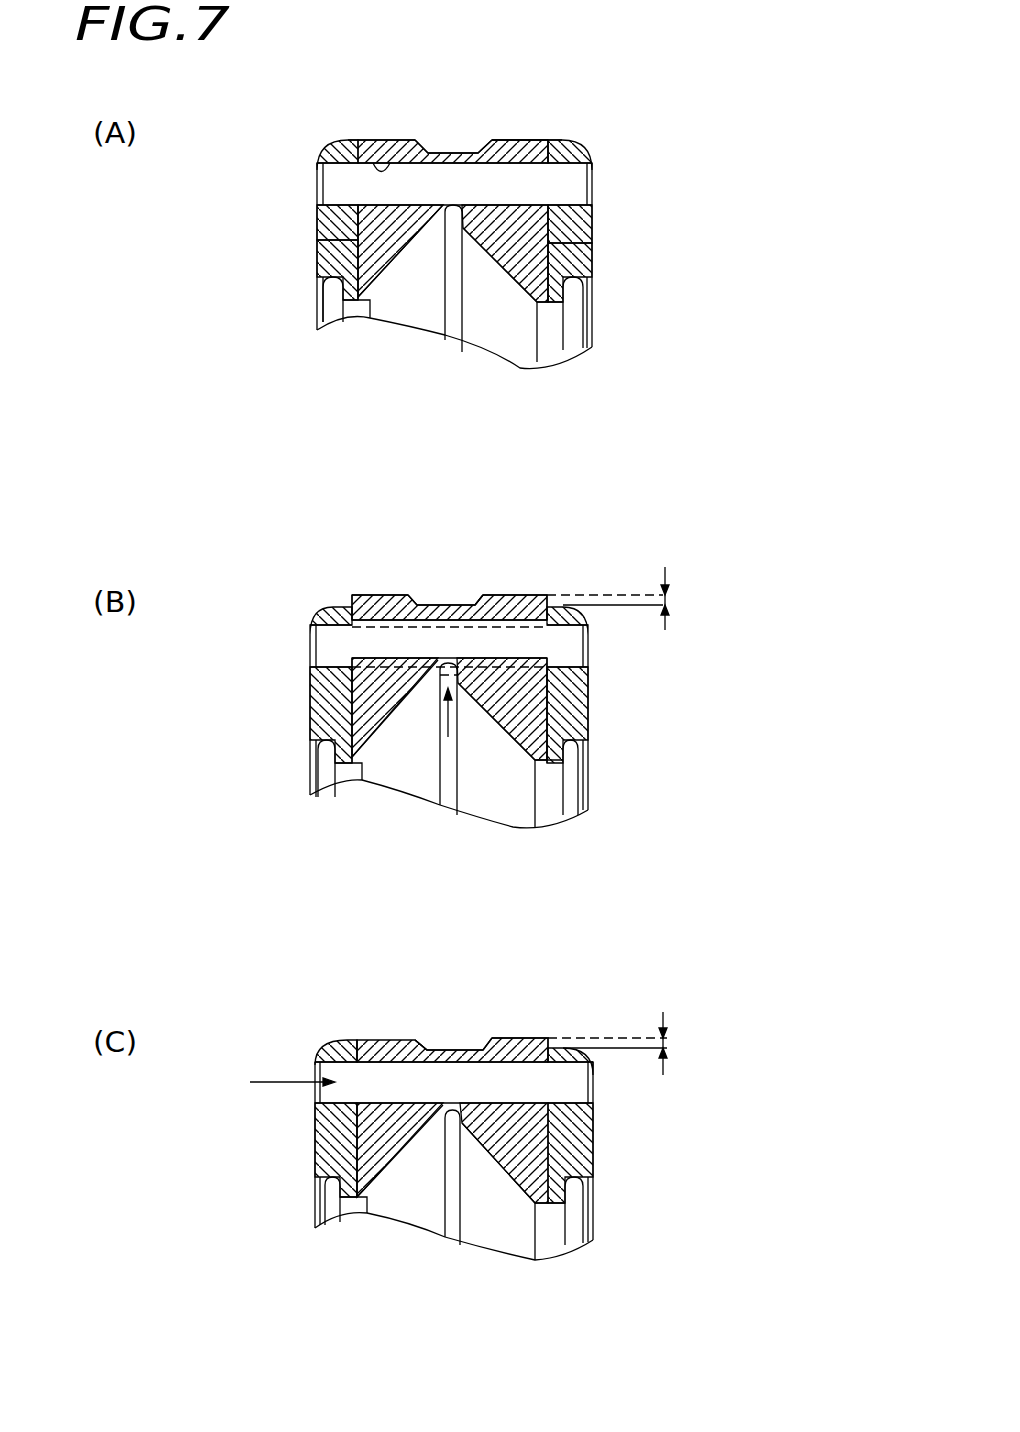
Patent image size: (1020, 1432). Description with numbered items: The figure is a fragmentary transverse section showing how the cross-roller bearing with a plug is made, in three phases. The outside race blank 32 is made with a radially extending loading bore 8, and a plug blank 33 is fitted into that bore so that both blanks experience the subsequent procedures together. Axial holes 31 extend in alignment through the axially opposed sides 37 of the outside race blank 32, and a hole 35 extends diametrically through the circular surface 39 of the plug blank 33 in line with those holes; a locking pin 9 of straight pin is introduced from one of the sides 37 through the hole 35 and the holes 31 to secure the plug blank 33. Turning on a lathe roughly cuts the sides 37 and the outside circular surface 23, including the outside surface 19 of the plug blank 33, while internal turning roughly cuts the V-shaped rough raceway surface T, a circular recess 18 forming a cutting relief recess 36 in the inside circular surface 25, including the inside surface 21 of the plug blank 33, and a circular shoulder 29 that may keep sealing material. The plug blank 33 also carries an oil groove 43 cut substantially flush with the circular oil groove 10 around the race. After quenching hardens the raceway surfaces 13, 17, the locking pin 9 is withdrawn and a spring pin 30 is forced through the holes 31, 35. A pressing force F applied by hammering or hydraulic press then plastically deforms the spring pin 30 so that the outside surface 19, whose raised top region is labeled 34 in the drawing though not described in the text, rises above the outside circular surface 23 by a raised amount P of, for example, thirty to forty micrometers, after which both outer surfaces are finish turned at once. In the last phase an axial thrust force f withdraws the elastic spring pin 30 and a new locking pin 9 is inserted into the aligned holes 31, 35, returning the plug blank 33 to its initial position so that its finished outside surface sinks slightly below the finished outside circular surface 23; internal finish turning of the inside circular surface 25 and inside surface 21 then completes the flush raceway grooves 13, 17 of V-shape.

The loading bore 8 is at (540, 147).
The locking pin 9 is at (575, 182).
The circular oil groove 10 is at (485, 603).
The raceway groove 13 is at (497, 327).
The raceway groove 17 is at (497, 255).
The circular recess 18 is at (452, 220).
The outside surface 19 is at (508, 140).
The inside surface 21 is at (537, 305).
The outside circular surface 23 is at (548, 140).
The inside circular surface 25 is at (345, 302).
The circular shoulder 29 is at (575, 290).
The spring pin 30 is at (565, 653).
The axial holes 31 is at (342, 203).
The outside race blank 32 is at (335, 253).
The plug blank 33 is at (395, 148).
The upper surface 34 is at (530, 600).
The hole 35 is at (375, 163).
The cutting relief recess 36 is at (452, 320).
The axially opposed sides 37 is at (317, 212).
The circular surface 39 is at (357, 240).
The oil groove 43 is at (465, 157).
The rough raceway surface T is at (383, 283).
The pressing force F is at (459, 717).
The raised amount P is at (617, 598).
The axial thrust force f is at (284, 1080).